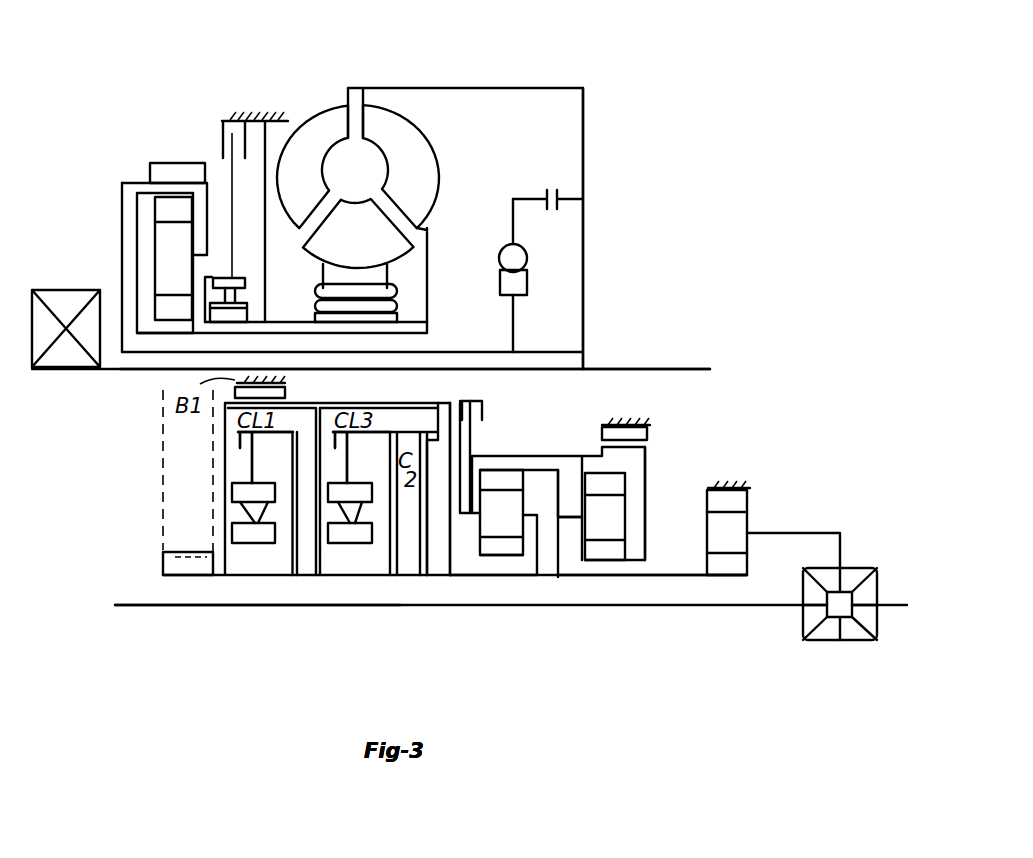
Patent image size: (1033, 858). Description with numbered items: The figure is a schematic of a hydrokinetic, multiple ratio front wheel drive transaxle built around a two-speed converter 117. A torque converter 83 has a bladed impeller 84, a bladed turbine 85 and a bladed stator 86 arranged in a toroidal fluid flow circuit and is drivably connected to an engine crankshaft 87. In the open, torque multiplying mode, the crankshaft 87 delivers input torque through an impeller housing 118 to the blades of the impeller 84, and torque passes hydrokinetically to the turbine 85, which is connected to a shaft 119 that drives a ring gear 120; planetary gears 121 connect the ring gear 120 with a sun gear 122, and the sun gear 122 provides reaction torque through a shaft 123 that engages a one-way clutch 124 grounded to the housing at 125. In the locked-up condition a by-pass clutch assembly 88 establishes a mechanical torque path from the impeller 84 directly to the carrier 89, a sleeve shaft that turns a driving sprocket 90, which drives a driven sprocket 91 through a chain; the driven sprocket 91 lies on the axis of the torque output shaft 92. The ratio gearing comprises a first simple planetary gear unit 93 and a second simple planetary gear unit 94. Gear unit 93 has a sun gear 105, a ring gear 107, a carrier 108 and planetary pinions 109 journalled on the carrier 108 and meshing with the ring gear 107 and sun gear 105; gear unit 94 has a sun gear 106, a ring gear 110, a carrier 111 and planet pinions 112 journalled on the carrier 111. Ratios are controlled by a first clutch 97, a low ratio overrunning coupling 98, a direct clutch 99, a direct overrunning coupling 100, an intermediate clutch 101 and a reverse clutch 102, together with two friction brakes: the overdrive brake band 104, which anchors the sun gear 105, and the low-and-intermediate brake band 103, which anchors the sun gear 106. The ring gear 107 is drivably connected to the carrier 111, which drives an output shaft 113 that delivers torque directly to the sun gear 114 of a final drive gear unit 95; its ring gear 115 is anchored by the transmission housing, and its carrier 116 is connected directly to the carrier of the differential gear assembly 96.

The torque converter 83 is at (321, 84).
The bladed impeller 84 is at (313, 127).
The bladed turbine 85 is at (427, 173).
The bladed stator 86 is at (378, 244).
The engine crankshaft 87 is at (620, 367).
The by-pass clutch assembly 88 is at (543, 197).
The carrier 89 is at (118, 197).
The driving sprocket 90 is at (168, 168).
The driven sprocket 91 is at (163, 564).
The torque output shaft 92 is at (205, 608).
The first simple planetary gear unit 93 is at (478, 532).
The second simple planetary gear unit 94 is at (603, 521).
The final drive gear unit 95 is at (756, 520).
The differential gear assembly 96 is at (805, 622).
The CL1 clutch 97 is at (265, 437).
The low ratio overrunning coupling 98 is at (140, 503).
The CL3 direct clutch 99 is at (362, 437).
The direct overrunning coupling 100 is at (308, 615).
The CL2 intermediate clutch 101 is at (452, 403).
The CL4 reverse clutch 102 is at (485, 410).
The B2 low-and-intermediate brake band 103 is at (647, 432).
The B1 overdrive brake band 104 is at (287, 392).
The sun gear 105 is at (503, 545).
The sun gear 106 is at (603, 552).
The ring gear 107 is at (497, 477).
The carrier 108 is at (460, 503).
The planetary pinions 109 is at (520, 533).
The ring gear 110 is at (608, 483).
The carrier 111 is at (573, 513).
The planet pinions 112 is at (610, 508).
The output shaft 113 is at (668, 573).
The sun gear 114 is at (700, 572).
The ring gear 115 is at (750, 490).
The carrier 116 is at (803, 533).
The two-speed converter 117 is at (113, 180).
The impeller housing 118 is at (583, 122).
The shaft 119 is at (430, 302).
The ring gear 120 is at (172, 205).
The planetary gears 121 is at (170, 245).
The sun gear 122 is at (168, 305).
The shaft 123 is at (205, 268).
The one-way clutch 124 is at (237, 311).
The housing ground 125 is at (250, 112).